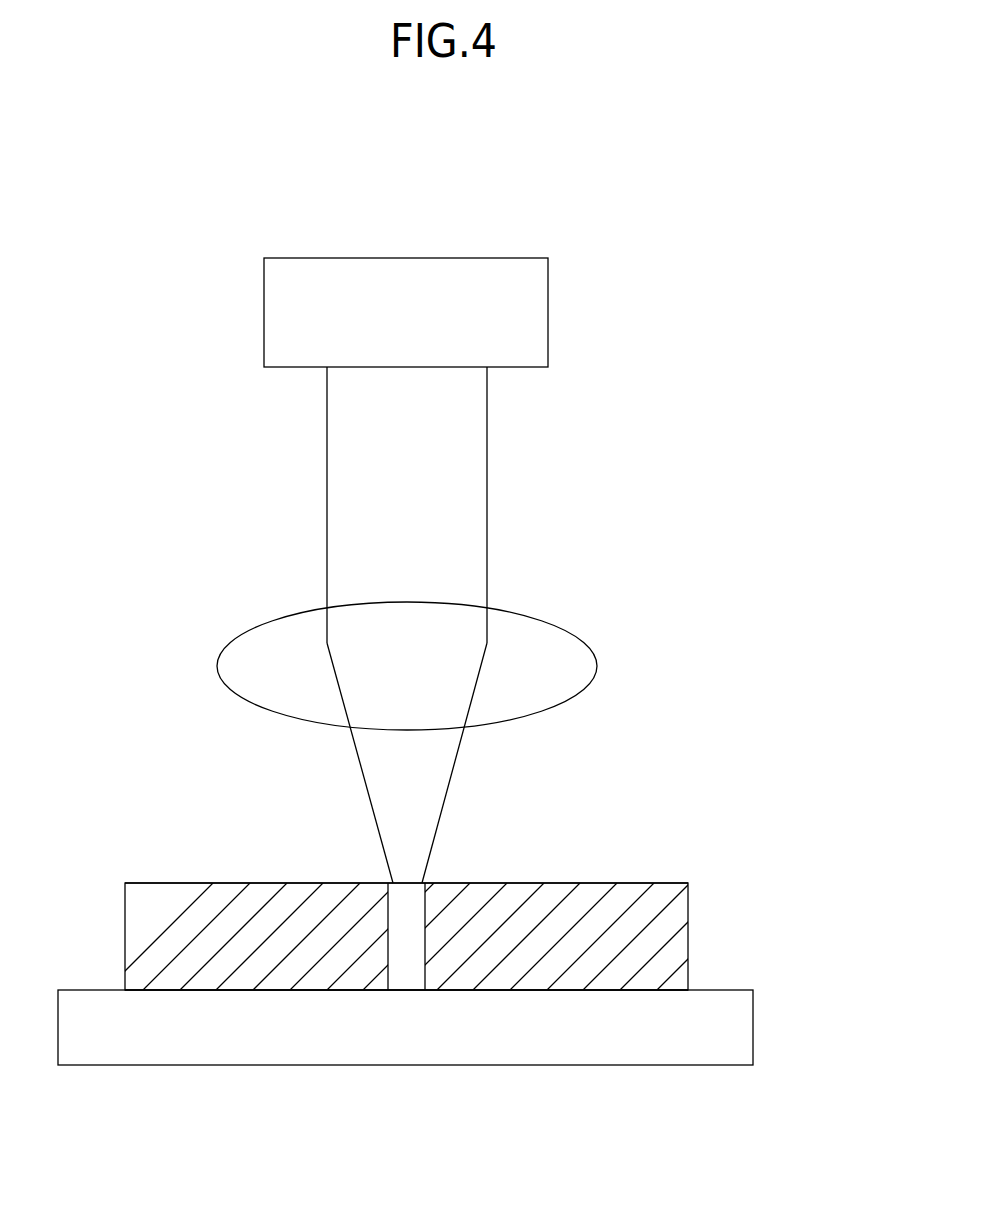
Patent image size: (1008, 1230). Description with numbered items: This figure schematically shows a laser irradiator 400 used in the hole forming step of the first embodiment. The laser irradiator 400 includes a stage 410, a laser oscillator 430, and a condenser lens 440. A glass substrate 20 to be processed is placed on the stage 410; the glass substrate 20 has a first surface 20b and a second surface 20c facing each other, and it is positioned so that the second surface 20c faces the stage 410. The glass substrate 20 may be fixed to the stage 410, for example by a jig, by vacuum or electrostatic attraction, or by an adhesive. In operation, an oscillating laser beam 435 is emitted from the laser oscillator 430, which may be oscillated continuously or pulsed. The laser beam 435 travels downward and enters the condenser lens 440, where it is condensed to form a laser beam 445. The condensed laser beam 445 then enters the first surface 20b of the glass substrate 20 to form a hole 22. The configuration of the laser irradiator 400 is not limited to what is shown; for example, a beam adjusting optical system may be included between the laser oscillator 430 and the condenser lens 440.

The laser irradiator 400 is at (180, 210).
The laser oscillator 430 is at (558, 316).
The laser beam 435 is at (377, 515).
The condenser lens 440 is at (557, 653).
The laser beam 445 is at (376, 790).
The hole 22 is at (407, 877).
The glass substrate 20 is at (621, 905).
The first surface 20b is at (170, 873).
The second surface 20c is at (172, 985).
The stage 410 is at (690, 1010).